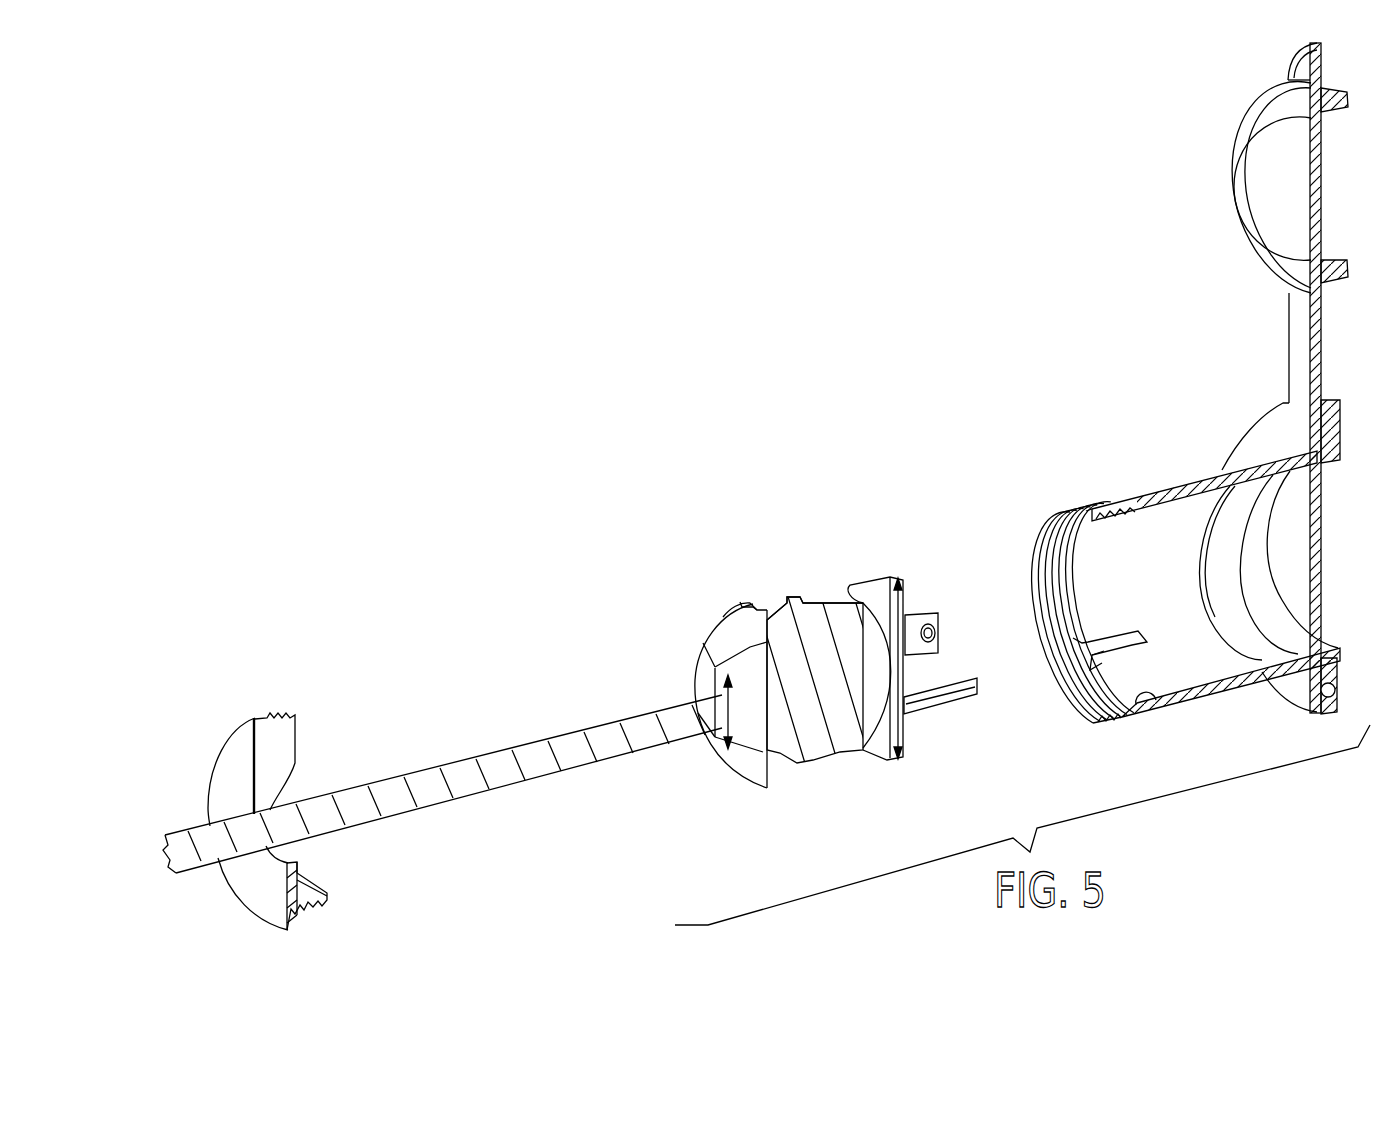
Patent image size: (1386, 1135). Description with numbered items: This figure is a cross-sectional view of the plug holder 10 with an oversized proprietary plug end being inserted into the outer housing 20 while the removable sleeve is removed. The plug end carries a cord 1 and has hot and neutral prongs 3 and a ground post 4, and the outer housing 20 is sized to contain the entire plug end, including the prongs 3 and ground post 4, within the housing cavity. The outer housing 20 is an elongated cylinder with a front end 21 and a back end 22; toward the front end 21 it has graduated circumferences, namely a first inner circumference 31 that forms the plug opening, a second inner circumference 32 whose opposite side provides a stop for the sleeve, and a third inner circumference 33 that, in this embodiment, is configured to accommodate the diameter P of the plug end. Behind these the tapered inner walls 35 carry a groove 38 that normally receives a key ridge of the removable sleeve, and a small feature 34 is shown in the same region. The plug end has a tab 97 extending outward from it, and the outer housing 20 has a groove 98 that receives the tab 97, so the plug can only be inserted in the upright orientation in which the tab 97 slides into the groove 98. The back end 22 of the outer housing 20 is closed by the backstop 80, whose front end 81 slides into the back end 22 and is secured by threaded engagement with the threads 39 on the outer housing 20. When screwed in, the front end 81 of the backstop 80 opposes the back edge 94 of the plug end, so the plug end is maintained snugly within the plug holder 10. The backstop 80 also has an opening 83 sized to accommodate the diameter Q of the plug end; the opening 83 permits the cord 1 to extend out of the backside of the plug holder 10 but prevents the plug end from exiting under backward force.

The cord 1 is at (570, 745).
The prongs 3 is at (922, 613).
The ground post 4 is at (943, 707).
The plug holder 10 is at (848, 330).
The outer housing 20 is at (1197, 472).
The front end 21 is at (818, 618).
The back end 22 is at (1068, 512).
The first inner circumference 31 is at (1265, 540).
The second inner circumference 32 is at (1230, 602).
The third inner circumference 33 is at (1235, 643).
The aperture 34 is at (1148, 696).
The tapered inner walls 35 is at (1213, 677).
The groove 38 is at (1097, 648).
The threads 39 is at (1090, 707).
The backstop 80 is at (237, 730).
The front end 81 is at (298, 737).
The opening 83 is at (285, 858).
The back edge 94 is at (735, 631).
The tab 97 is at (795, 592).
The groove 98 is at (1190, 487).
The diameter P is at (893, 688).
The diameter Q is at (723, 713).